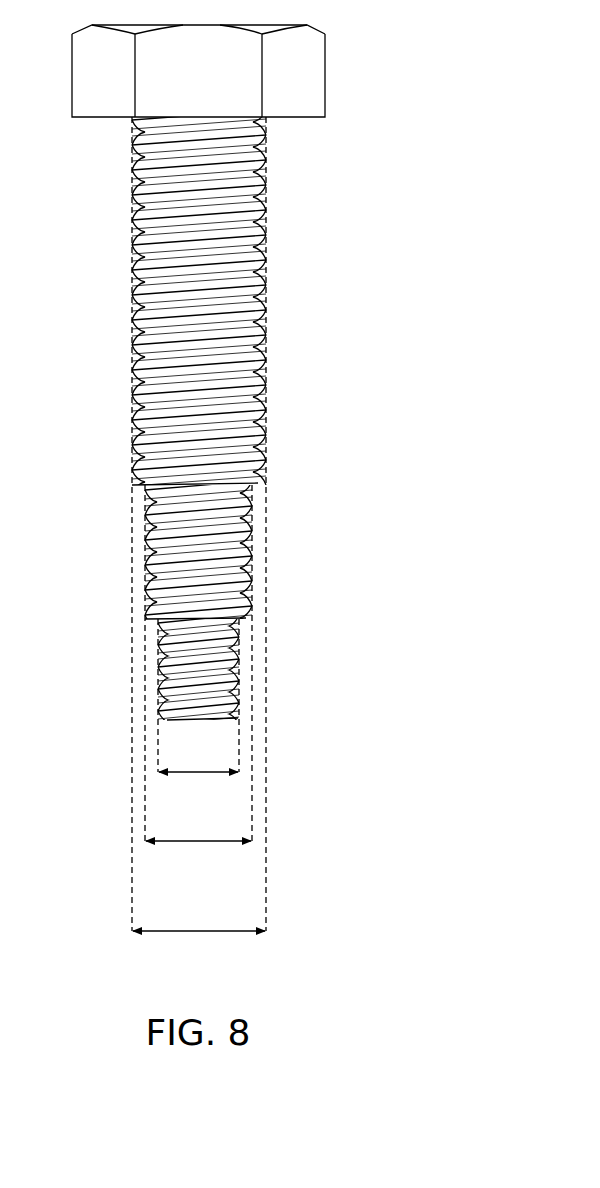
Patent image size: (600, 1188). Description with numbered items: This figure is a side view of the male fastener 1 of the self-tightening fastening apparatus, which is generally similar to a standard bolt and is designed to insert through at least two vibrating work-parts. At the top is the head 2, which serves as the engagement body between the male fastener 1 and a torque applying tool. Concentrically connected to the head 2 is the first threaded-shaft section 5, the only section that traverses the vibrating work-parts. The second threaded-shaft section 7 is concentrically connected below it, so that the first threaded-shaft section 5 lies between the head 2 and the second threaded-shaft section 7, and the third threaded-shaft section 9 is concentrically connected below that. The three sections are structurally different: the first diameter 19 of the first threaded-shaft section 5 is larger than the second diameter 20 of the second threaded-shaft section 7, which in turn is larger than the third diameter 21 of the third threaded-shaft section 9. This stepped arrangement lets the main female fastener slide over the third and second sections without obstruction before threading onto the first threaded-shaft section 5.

The male fastener 1 is at (418, 281).
The head 2 is at (80, 80).
The first threaded-shaft section 5 is at (132, 215).
The second threaded-shaft section 7 is at (148, 555).
The third threaded-shaft section 9 is at (158, 662).
The first diameter 19 is at (192, 931).
The second diameter 20 is at (177, 841).
The third diameter 21 is at (190, 772).